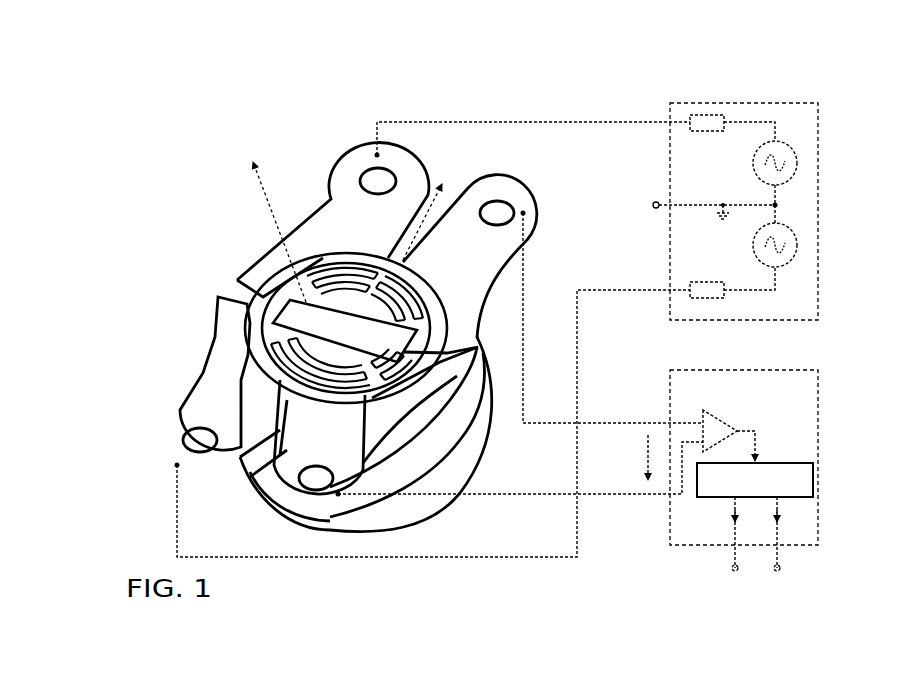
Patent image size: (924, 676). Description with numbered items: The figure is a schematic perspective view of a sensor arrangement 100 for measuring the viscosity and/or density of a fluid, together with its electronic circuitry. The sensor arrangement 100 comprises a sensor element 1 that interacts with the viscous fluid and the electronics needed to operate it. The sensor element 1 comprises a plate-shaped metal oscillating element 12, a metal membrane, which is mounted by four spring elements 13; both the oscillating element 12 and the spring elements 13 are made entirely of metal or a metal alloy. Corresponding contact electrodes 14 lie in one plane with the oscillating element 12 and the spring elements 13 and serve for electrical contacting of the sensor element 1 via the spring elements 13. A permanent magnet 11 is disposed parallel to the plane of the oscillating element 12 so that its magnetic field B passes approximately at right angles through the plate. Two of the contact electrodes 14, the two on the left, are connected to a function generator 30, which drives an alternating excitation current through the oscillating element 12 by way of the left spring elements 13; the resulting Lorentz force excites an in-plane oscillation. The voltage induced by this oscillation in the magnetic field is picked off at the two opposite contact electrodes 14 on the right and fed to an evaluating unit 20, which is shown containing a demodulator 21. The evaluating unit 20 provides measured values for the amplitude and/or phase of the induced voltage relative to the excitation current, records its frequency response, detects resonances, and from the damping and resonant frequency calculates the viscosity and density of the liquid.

The sensor arrangement 100 is at (324, 82).
The sensor element 1 is at (192, 266).
The permanent magnet 11 is at (460, 570).
The oscillating element 12 is at (272, 324).
The spring elements 13 is at (300, 385).
The contact electrodes 14 is at (597, 155).
The function generator 30 is at (685, 197).
The evaluating unit 20 is at (678, 547).
The demodulator 21 is at (755, 480).